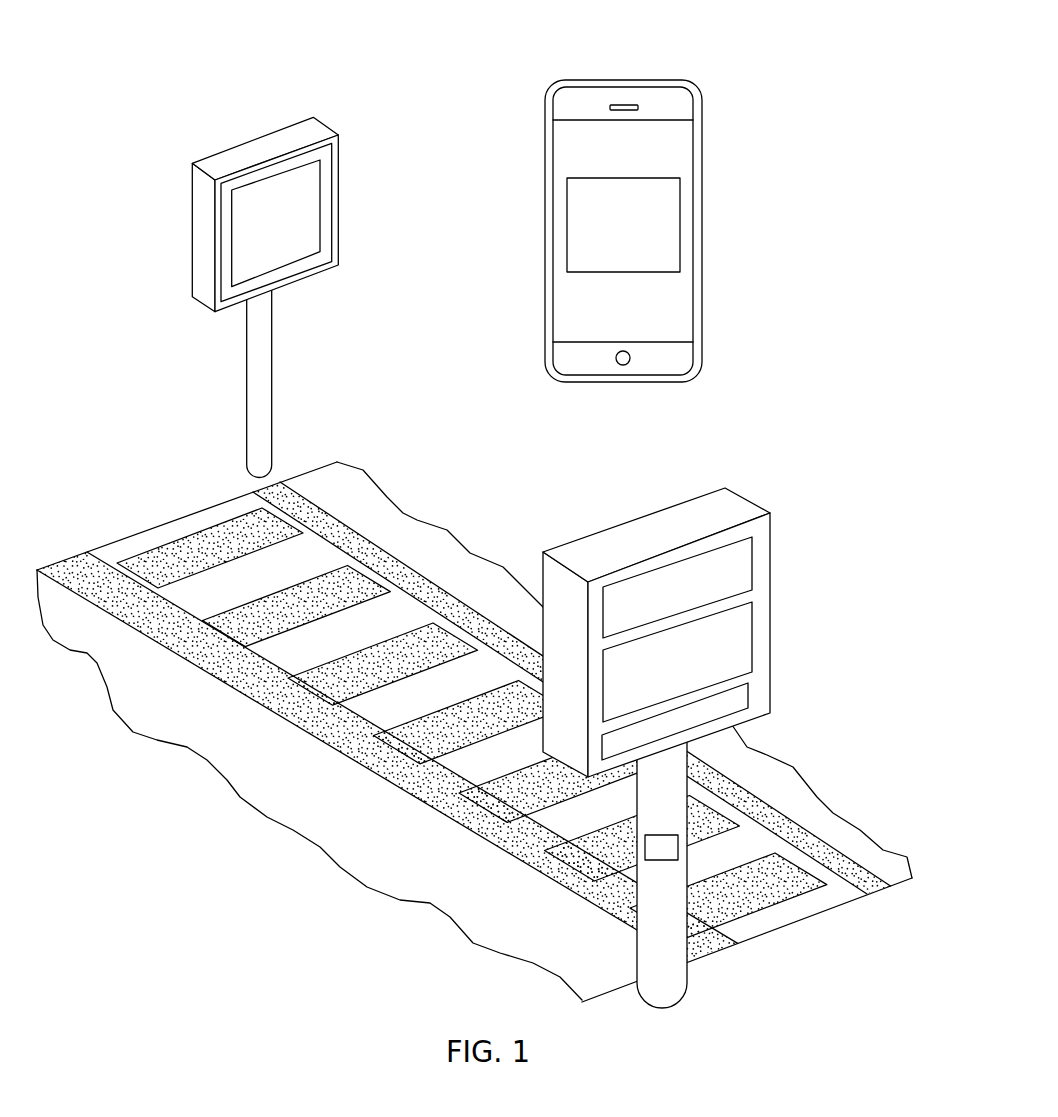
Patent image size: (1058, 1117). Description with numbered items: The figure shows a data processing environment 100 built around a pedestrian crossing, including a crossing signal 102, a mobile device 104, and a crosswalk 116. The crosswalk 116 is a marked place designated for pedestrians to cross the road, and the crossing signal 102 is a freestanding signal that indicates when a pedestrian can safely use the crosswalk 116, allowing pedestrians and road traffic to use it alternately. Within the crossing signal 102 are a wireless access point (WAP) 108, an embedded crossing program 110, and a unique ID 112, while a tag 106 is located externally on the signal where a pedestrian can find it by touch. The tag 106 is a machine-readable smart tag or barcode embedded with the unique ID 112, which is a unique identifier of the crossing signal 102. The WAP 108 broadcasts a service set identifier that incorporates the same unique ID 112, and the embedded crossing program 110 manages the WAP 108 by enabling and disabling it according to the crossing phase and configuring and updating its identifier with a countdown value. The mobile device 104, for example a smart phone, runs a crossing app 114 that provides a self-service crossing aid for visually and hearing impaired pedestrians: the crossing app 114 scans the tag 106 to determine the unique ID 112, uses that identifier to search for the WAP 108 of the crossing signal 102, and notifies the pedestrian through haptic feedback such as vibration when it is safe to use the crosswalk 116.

The data processing environment 100 is at (248, 60).
The crossing signal 102 is at (748, 502).
The mobile device 104 is at (545, 159).
The tag 106 is at (678, 847).
The wireless access point (WAP) 108 is at (745, 578).
The embedded crossing program 110 is at (745, 650).
The unique ID 112 is at (743, 695).
The crossing app 114 is at (604, 262).
The crosswalk 116 is at (381, 547).